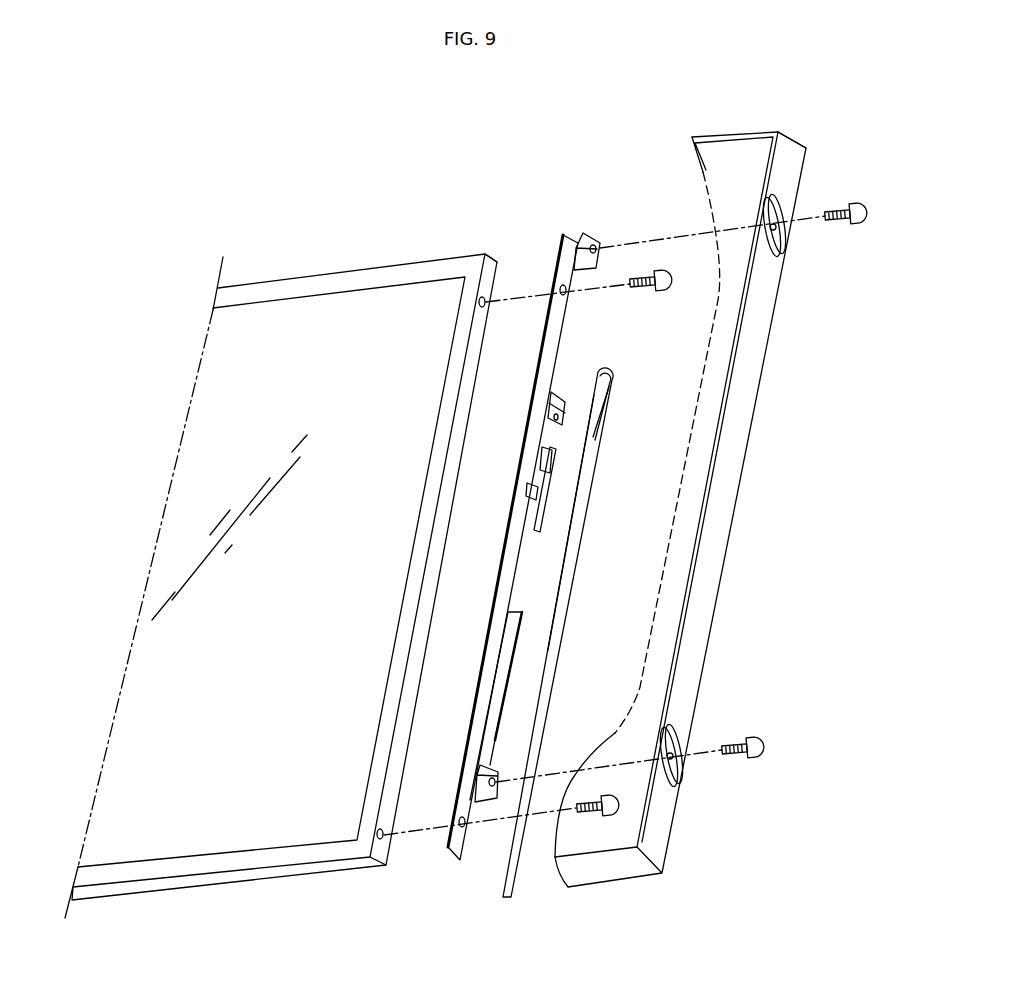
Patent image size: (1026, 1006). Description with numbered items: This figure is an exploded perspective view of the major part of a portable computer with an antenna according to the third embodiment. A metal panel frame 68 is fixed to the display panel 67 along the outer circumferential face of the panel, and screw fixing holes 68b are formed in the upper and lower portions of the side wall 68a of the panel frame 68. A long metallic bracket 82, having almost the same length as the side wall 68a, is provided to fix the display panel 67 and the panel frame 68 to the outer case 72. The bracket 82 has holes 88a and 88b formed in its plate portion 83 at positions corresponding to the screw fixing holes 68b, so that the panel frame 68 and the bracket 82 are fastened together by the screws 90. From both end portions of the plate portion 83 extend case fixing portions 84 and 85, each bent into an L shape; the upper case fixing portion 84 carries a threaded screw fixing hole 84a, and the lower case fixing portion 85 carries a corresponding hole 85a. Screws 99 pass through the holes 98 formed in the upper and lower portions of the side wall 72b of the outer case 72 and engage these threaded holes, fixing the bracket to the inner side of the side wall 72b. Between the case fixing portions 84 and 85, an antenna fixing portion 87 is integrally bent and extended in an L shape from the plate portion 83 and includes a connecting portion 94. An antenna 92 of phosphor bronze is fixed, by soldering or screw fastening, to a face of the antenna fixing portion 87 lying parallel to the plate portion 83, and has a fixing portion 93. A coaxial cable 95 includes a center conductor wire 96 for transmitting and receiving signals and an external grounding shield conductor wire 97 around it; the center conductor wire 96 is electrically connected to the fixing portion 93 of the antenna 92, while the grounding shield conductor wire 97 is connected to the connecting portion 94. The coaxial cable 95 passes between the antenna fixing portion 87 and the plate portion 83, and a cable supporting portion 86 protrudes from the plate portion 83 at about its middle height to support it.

The display panel 67 is at (342, 308).
The panel frame 68 is at (375, 280).
The side wall 68a is at (492, 256).
The screw fixing holes 68b is at (480, 298).
The outer case 72 is at (628, 870).
The side walls 72b is at (718, 583).
The bracket 82 is at (582, 200).
The plate portion 83 is at (566, 232).
The case fixing portion 84 is at (598, 237).
The screw fixing hole 84a is at (600, 247).
The case fixing portion 85 is at (488, 805).
The lower tab hole 85a is at (488, 779).
The cable supporting portion 86 is at (531, 486).
The antenna fixing portion 87 is at (562, 393).
The hole 88a is at (560, 294).
The hole 88b is at (465, 828).
The screws 90 is at (670, 292).
The antenna 92 is at (540, 520).
The fixing portion 93 is at (552, 470).
The connecting portion 94 is at (556, 406).
The coaxial cable 95 is at (562, 578).
The center conductor wire 96 is at (600, 430).
The grounding shield conductor wire 97 is at (615, 385).
The holes 98 is at (785, 207).
The screws 99 is at (862, 232).